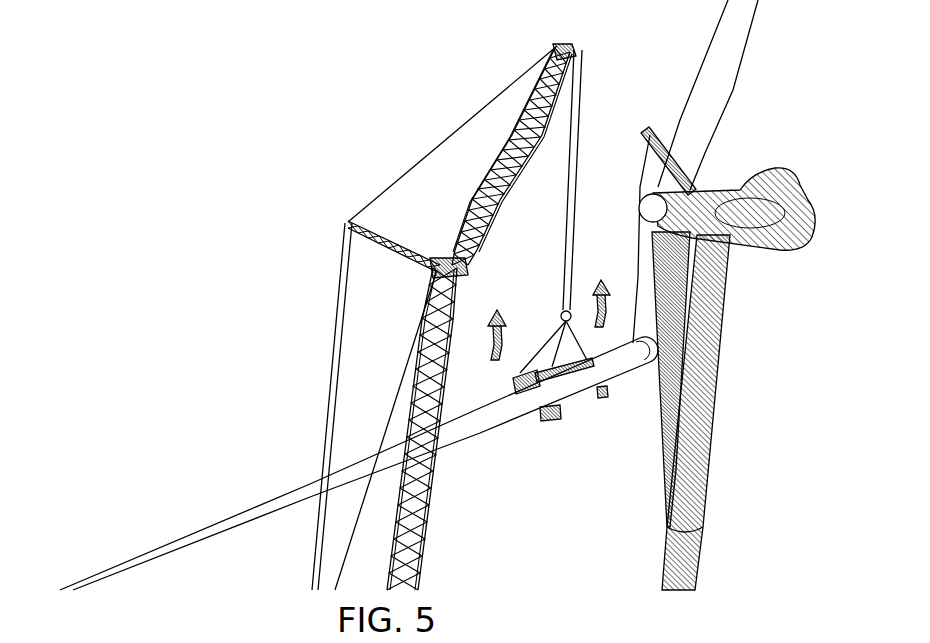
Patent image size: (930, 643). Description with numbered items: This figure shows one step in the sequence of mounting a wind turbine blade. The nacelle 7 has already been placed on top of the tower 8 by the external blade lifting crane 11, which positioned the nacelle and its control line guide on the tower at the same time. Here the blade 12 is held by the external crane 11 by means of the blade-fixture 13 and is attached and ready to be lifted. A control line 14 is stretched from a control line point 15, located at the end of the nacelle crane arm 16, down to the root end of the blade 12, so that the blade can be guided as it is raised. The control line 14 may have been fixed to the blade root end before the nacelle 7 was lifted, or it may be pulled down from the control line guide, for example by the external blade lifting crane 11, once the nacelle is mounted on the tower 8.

The nacelle 7 is at (777, 217).
The tower 8 is at (715, 400).
The external blade lifting crane 11 is at (372, 197).
The blade 12 is at (245, 510).
The blade-fixture 13 is at (557, 350).
The control line 14 is at (633, 277).
The control line point 15 is at (668, 155).
The nacelle crane arm 16 is at (667, 155).